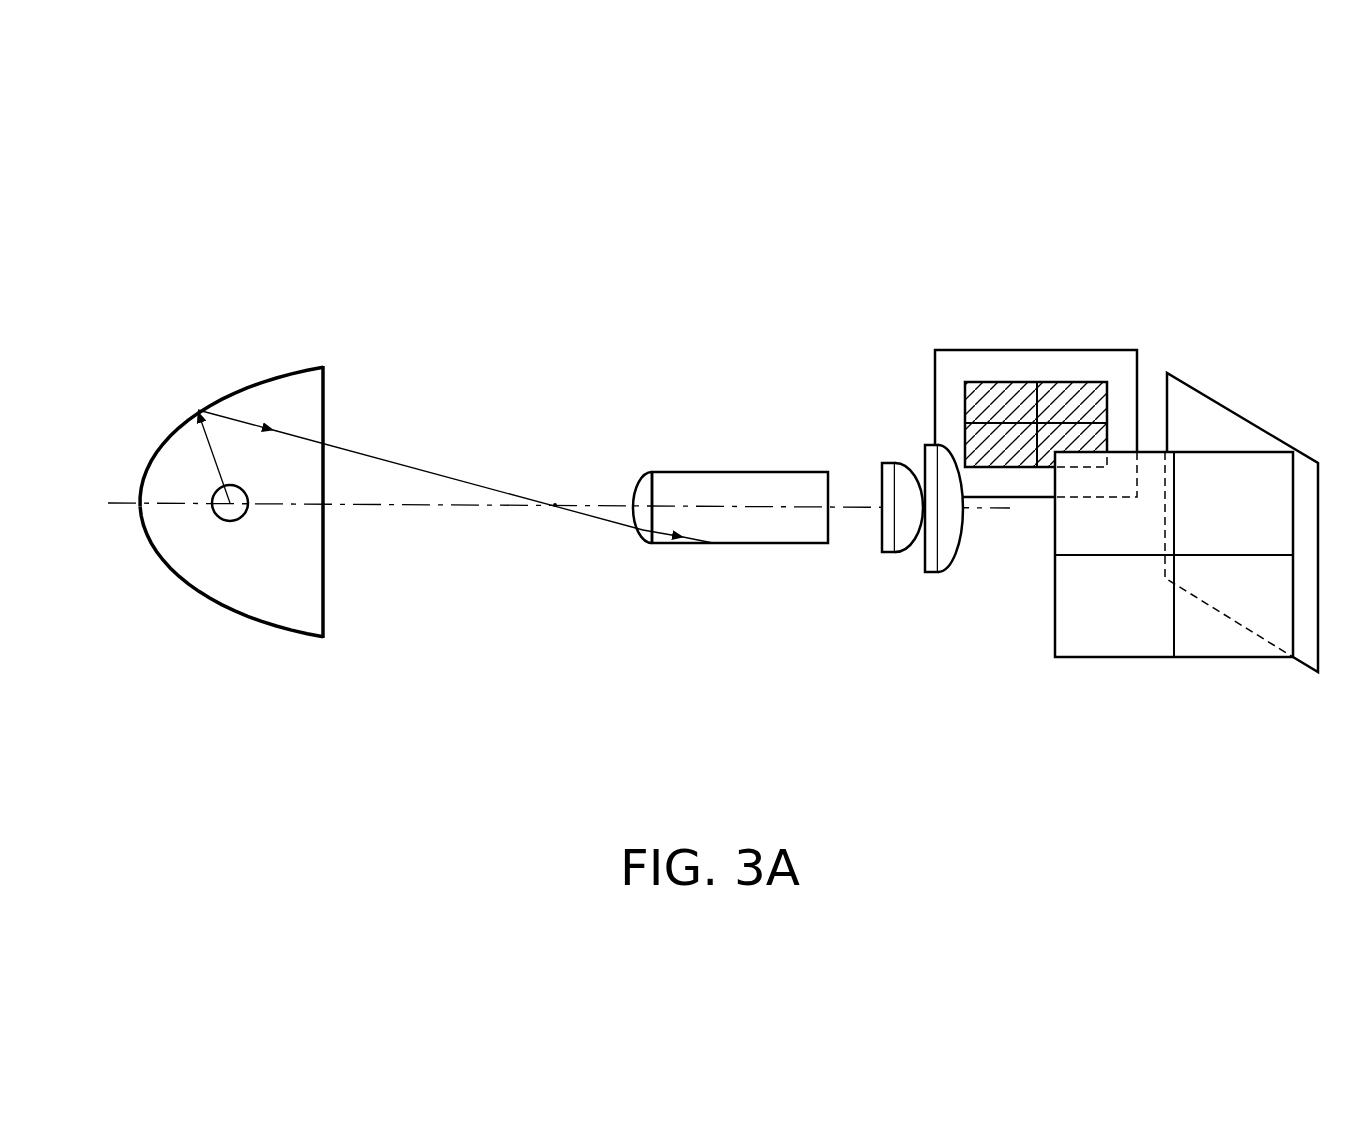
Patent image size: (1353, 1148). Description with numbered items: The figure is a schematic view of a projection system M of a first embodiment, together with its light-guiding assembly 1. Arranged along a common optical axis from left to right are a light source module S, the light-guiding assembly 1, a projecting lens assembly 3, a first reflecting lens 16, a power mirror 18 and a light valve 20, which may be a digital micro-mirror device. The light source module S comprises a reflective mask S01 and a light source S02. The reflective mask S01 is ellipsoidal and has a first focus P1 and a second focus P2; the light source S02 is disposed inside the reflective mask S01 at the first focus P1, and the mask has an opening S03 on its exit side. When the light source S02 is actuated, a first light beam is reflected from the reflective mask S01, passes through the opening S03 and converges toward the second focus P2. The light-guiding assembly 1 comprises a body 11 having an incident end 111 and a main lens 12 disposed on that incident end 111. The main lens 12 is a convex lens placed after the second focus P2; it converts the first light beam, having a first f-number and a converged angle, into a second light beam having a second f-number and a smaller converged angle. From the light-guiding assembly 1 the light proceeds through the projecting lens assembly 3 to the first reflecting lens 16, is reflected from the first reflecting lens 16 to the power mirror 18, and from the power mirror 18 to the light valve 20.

The projection system M is at (153, 143).
The light source module S is at (102, 272).
The reflective mask S01 is at (250, 382).
The light source S02 is at (212, 490).
The opening S03 is at (323, 612).
The first focus P1 is at (230, 500).
The second focus P2 is at (553, 507).
The light-guiding assembly 1 is at (709, 504).
The body 11 is at (738, 550).
The incident end 111 is at (652, 492).
The main lens 12 is at (637, 542).
The projecting lens assembly 3 is at (892, 562).
The light valve 20 is at (1037, 350).
The first reflecting lens 16 is at (1262, 430).
The power mirror 18 is at (1125, 658).